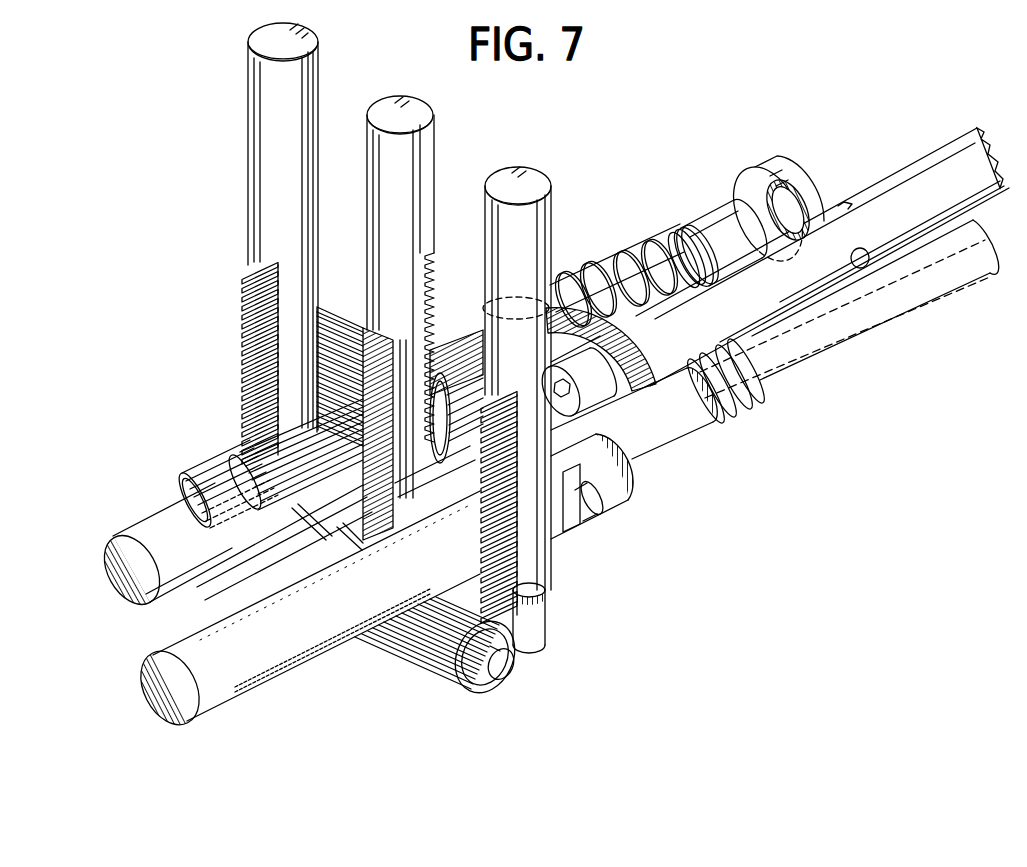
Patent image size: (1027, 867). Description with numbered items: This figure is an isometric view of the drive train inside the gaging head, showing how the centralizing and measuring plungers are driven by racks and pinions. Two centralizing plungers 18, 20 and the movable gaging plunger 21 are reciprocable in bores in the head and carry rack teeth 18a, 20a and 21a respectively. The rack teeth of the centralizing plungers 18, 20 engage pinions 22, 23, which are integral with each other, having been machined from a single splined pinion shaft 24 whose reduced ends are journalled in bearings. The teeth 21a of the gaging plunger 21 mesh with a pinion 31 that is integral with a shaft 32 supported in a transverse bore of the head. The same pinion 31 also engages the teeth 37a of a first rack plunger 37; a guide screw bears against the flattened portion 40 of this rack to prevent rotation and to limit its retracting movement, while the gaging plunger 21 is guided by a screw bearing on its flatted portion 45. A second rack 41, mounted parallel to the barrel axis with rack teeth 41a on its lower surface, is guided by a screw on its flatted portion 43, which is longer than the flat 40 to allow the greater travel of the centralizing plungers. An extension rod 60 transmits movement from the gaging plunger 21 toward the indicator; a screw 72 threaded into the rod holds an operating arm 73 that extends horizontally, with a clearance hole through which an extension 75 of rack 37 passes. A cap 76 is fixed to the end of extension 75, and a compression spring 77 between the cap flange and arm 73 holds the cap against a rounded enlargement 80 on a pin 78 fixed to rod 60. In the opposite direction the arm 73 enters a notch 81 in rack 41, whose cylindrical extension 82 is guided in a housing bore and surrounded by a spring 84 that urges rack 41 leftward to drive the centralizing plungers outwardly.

The centralizing plunger 18 is at (272, 131).
The rack teeth 18a is at (244, 311).
The gaging plunger 21 is at (412, 170).
The rack teeth 21a is at (436, 282).
The centralizing plunger 20 is at (531, 226).
The rack teeth 20a is at (548, 585).
The flatted portion 43 is at (522, 540).
The pinion 22 is at (200, 480).
The teeth 37a is at (238, 418).
The first rack plunger 37 is at (152, 528).
The pinion shaft 24 is at (290, 545).
The flatted portion 45 is at (366, 508).
The second rack 41 is at (220, 700).
The rack teeth 41a is at (322, 658).
The pinion 23 is at (430, 658).
The pinion 31 is at (434, 372).
The flattened portion 40 is at (450, 352).
The shaft 32 is at (603, 480).
The extension rod 60 is at (940, 150).
The cylindrical extension 82 is at (868, 322).
The spring 84 is at (762, 378).
The notch 81 is at (640, 392).
The screw 72 is at (600, 395).
The operating arm 73 is at (635, 345).
The extension 75 is at (603, 278).
The compression spring 77 is at (672, 250).
The cap 76 is at (705, 225).
The pin 78 is at (798, 185).
The rounded enlargement 80 is at (790, 165).